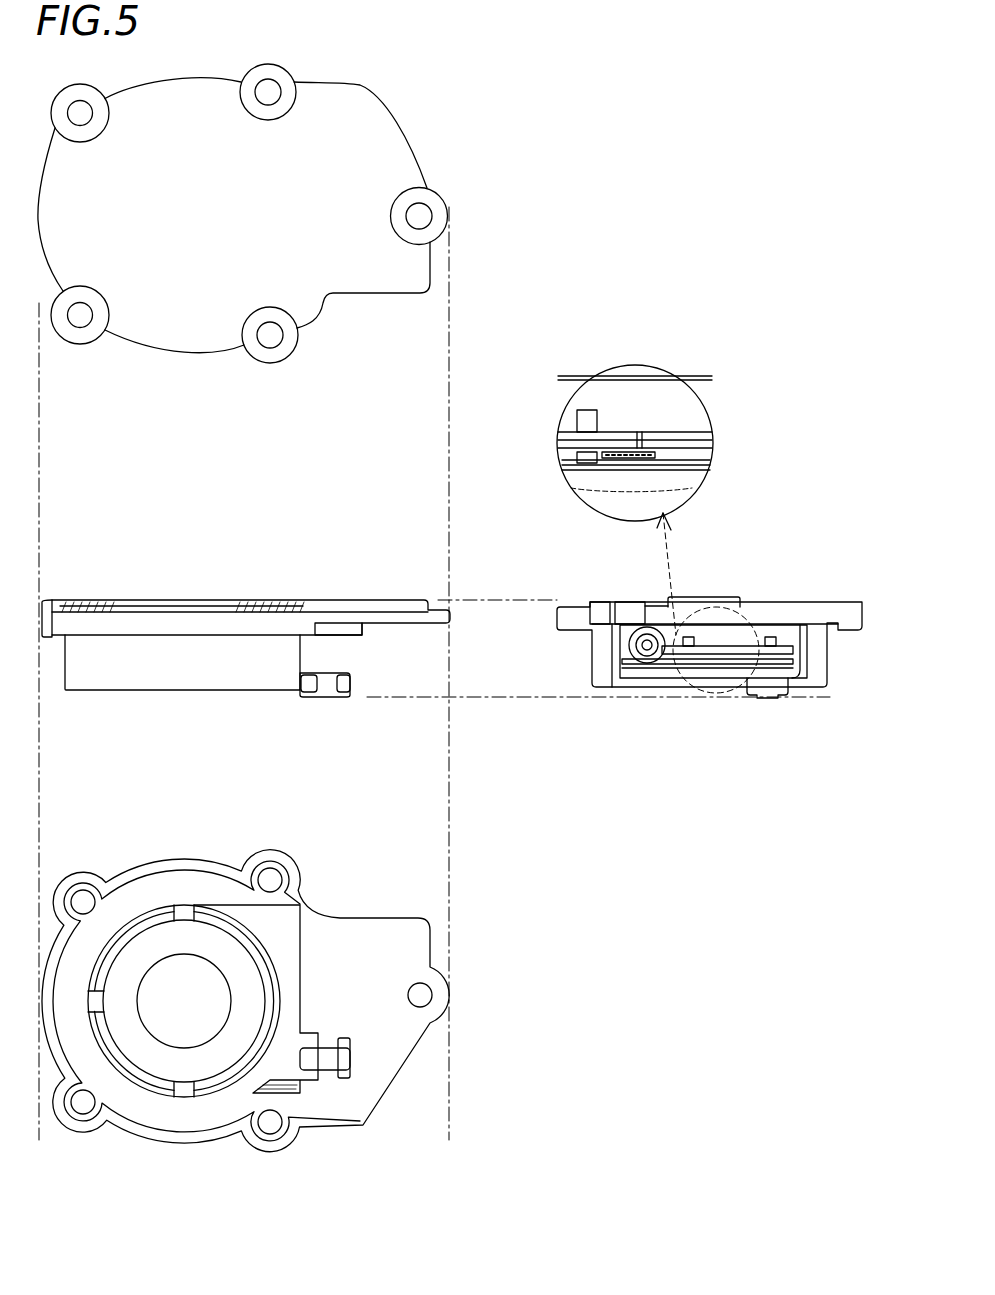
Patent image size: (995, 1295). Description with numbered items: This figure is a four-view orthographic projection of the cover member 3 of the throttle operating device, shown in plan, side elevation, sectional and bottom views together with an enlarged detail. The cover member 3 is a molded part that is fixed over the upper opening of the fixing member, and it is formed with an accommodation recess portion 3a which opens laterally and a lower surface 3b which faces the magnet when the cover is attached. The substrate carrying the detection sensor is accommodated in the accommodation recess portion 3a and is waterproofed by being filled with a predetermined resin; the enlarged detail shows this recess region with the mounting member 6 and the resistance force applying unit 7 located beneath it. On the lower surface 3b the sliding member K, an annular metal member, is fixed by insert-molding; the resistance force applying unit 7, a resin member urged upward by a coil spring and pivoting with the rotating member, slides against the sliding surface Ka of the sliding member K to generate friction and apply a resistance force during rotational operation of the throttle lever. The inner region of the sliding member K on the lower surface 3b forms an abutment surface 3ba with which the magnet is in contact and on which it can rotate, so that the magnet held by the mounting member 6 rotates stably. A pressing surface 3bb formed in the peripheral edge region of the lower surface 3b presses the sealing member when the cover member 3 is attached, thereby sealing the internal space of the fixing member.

The cover member 3 is at (390, 133).
The accommodation recess portion 3a is at (641, 385).
The lower surface 3b is at (167, 694).
The abutment surface 3ba is at (196, 1025).
The pressing surface 3bb is at (137, 895).
The mounting member 6 is at (683, 428).
The resistance force applying unit 7 is at (602, 477).
The sliding member K is at (262, 960).
The sliding surface Ka is at (153, 1060).